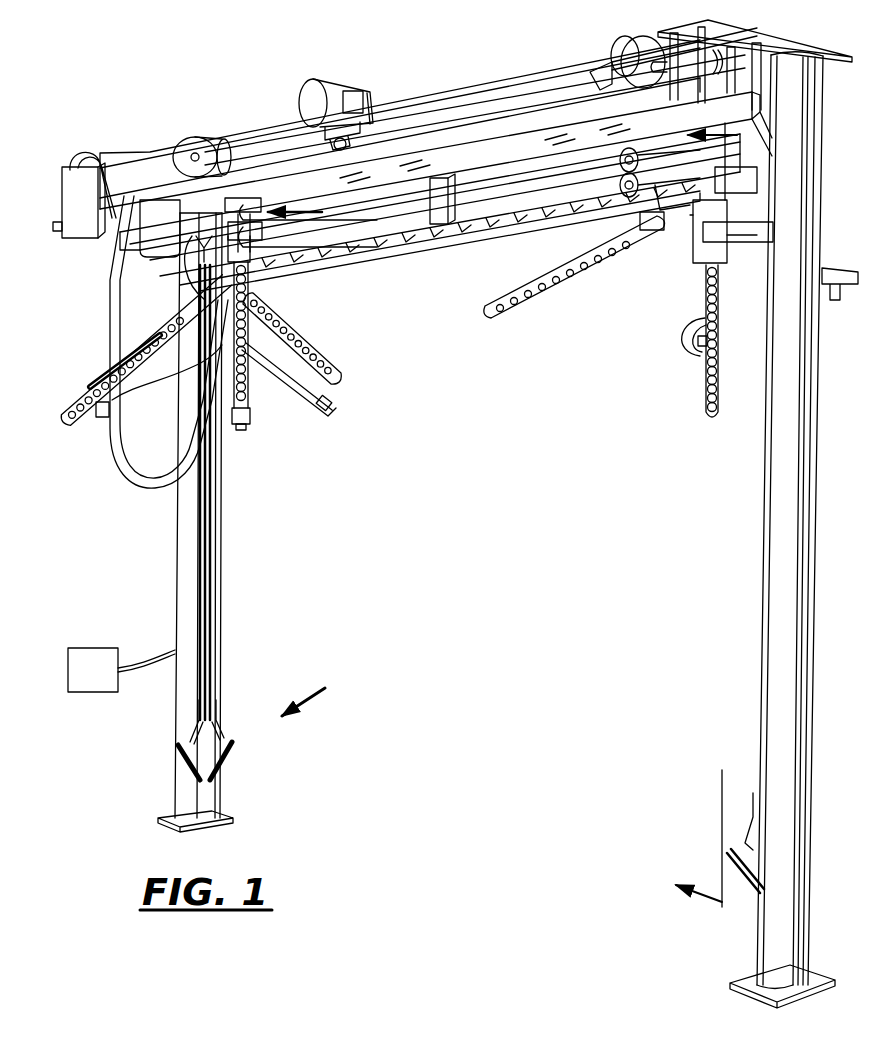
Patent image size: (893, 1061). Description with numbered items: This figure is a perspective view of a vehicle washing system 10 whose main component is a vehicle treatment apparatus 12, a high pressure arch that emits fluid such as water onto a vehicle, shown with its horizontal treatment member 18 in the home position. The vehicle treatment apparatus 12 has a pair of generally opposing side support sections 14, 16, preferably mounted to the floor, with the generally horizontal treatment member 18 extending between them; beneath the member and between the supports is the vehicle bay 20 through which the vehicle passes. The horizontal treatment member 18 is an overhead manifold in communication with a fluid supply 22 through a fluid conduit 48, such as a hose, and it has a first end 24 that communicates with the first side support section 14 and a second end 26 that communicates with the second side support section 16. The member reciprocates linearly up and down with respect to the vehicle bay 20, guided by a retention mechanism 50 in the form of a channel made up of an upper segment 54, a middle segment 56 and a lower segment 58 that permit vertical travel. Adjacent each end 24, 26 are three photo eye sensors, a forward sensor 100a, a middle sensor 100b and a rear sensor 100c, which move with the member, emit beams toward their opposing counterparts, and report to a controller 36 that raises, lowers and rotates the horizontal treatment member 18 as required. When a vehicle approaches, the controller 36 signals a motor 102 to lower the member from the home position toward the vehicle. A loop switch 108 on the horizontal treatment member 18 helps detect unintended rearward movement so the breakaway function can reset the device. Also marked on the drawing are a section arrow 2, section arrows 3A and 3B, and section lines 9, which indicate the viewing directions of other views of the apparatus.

The vehicle washing system 10 is at (100, 514).
The vehicle treatment apparatus 12 is at (839, 406).
The first side support section 14 is at (190, 626).
The second side support section 16 is at (788, 595).
The horizontal treatment member 18 is at (422, 206).
The vehicle bay 20 is at (437, 692).
The fluid supply 22 is at (68, 674).
The first end 24 is at (258, 258).
The second end 26 is at (680, 216).
The controller 36 is at (66, 195).
The fluid conduit 48 is at (153, 656).
The retention mechanism 50 is at (226, 554).
The upper segment 54 is at (185, 225).
The middle segment 56 is at (215, 668).
The lower segment 58 is at (215, 790).
The forward sensor 100a is at (100, 412).
The middle sensor 100b is at (252, 415).
The rear sensor 100c is at (340, 388).
The motor 102 is at (313, 86).
The loop switch 108 is at (444, 186).
The conveyor assembly 2 is at (394, 328).
The section line 9 is at (692, 515).
The section view 3A is at (317, 215).
The section view 3B is at (329, 689).